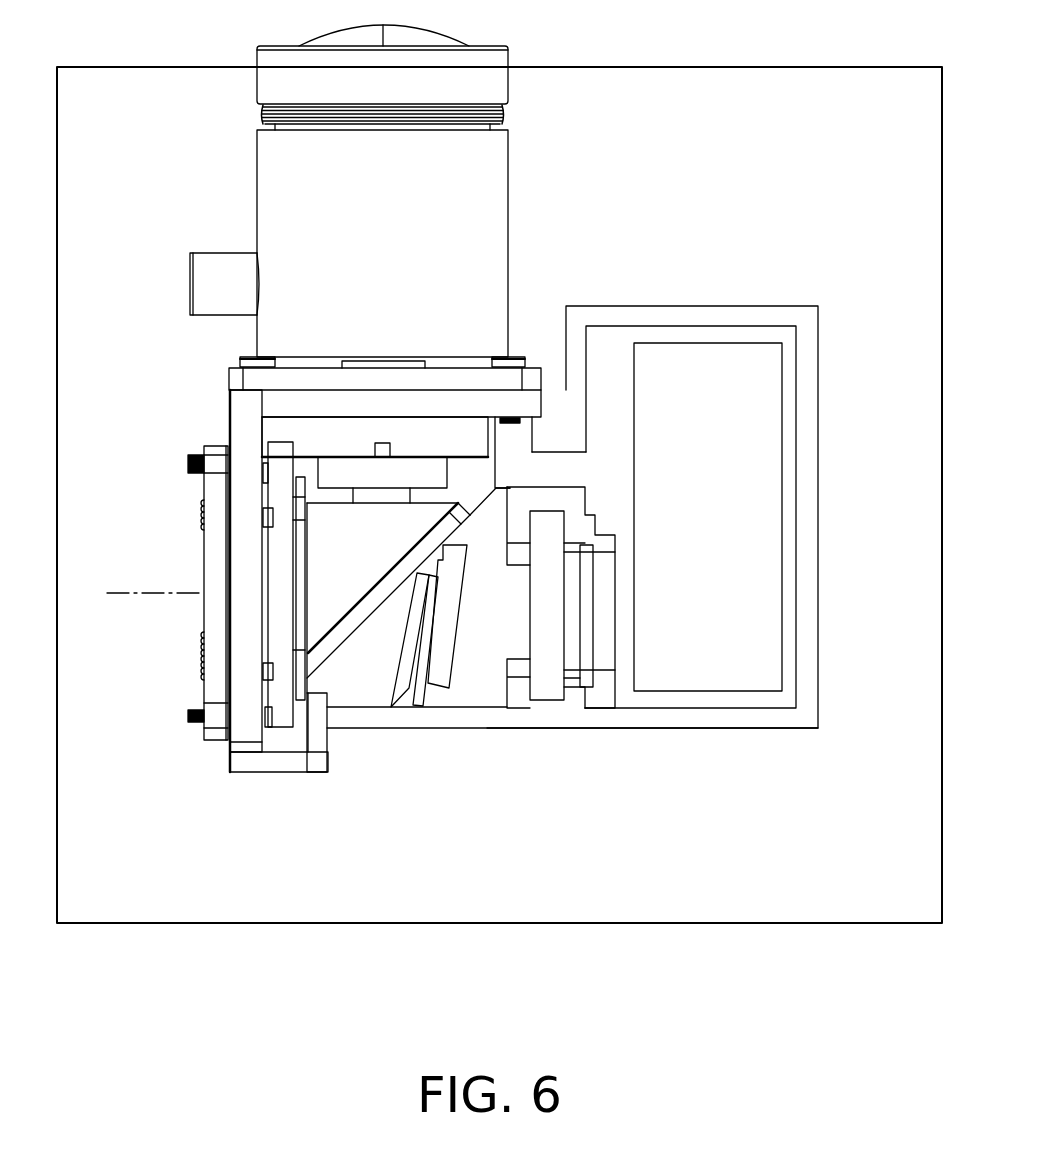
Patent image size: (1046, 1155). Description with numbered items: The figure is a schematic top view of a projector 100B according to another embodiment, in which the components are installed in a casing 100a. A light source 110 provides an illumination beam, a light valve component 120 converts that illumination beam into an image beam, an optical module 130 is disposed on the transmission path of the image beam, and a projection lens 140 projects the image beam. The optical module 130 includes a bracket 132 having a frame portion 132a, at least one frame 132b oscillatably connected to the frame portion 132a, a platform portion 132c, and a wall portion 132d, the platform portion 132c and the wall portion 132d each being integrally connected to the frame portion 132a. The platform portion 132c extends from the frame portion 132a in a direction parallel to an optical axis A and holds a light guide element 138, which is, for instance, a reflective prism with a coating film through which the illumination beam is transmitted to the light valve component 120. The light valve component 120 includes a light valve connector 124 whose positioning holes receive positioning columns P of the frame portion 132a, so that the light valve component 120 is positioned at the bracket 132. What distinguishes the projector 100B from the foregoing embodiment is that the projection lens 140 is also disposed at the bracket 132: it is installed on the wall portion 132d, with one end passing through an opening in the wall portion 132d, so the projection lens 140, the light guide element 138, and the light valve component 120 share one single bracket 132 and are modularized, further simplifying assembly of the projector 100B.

The projector 100B is at (865, 1001).
The casing 100a is at (632, 712).
The light source 110 is at (780, 487).
The light valve component 120 is at (166, 591).
The light valve connector 124 is at (218, 488).
The positioning column P is at (188, 467).
The optical axis A is at (115, 596).
The optical module 130 is at (470, 642).
The bracket 132 is at (330, 645).
The frame portion 132a is at (238, 727).
The frame 132b is at (283, 710).
The platform portion 132c is at (342, 636).
The wall portion 132d is at (415, 402).
The light guide element 138 is at (346, 500).
The projection lens 140 is at (240, 172).